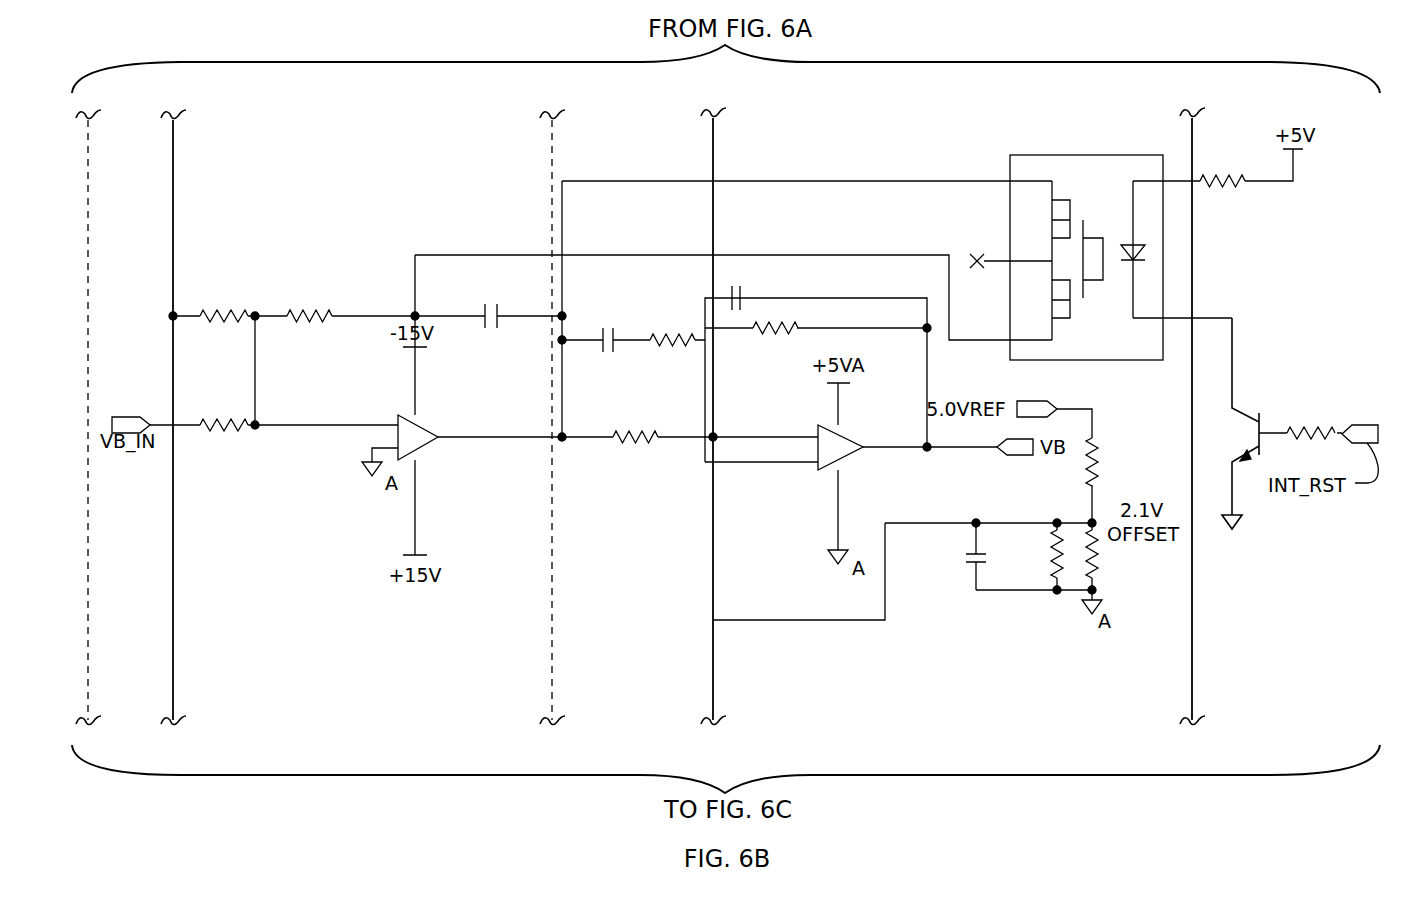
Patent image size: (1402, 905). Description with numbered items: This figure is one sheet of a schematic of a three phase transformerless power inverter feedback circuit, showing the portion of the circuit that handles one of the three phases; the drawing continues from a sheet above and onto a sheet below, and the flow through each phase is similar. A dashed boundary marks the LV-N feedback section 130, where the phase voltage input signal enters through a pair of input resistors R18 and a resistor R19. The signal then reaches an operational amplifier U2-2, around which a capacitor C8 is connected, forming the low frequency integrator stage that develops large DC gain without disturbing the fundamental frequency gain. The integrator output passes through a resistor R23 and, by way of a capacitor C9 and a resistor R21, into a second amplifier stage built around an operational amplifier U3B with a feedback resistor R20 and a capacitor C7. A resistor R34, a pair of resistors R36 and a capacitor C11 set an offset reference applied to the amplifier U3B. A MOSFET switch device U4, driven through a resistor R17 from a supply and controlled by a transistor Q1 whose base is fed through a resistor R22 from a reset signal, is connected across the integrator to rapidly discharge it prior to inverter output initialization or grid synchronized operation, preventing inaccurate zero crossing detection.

The LV-N feedback section 130 is at (553, 617).
The resistor R17 is at (1222, 176).
The resistor R18 is at (224, 364).
The resistor R19 is at (312, 310).
The resistor R20 is at (775, 329).
The resistor R21 is at (672, 335).
The resistor R22 is at (1311, 432).
The resistor R23 is at (636, 432).
The resistor R34 is at (1128, 460).
The resistor R36 is at (1075, 562).
The capacitor C7 is at (792, 284).
The capacitor C8 is at (490, 314).
The capacitor C9 is at (599, 335).
The capacitor C11 is at (937, 556).
The operational amplifier U2-2 is at (464, 417).
The operational amplifier U3B is at (857, 428).
The opto-isolator U4 is at (1086, 245).
The transistor Q1 is at (1260, 426).